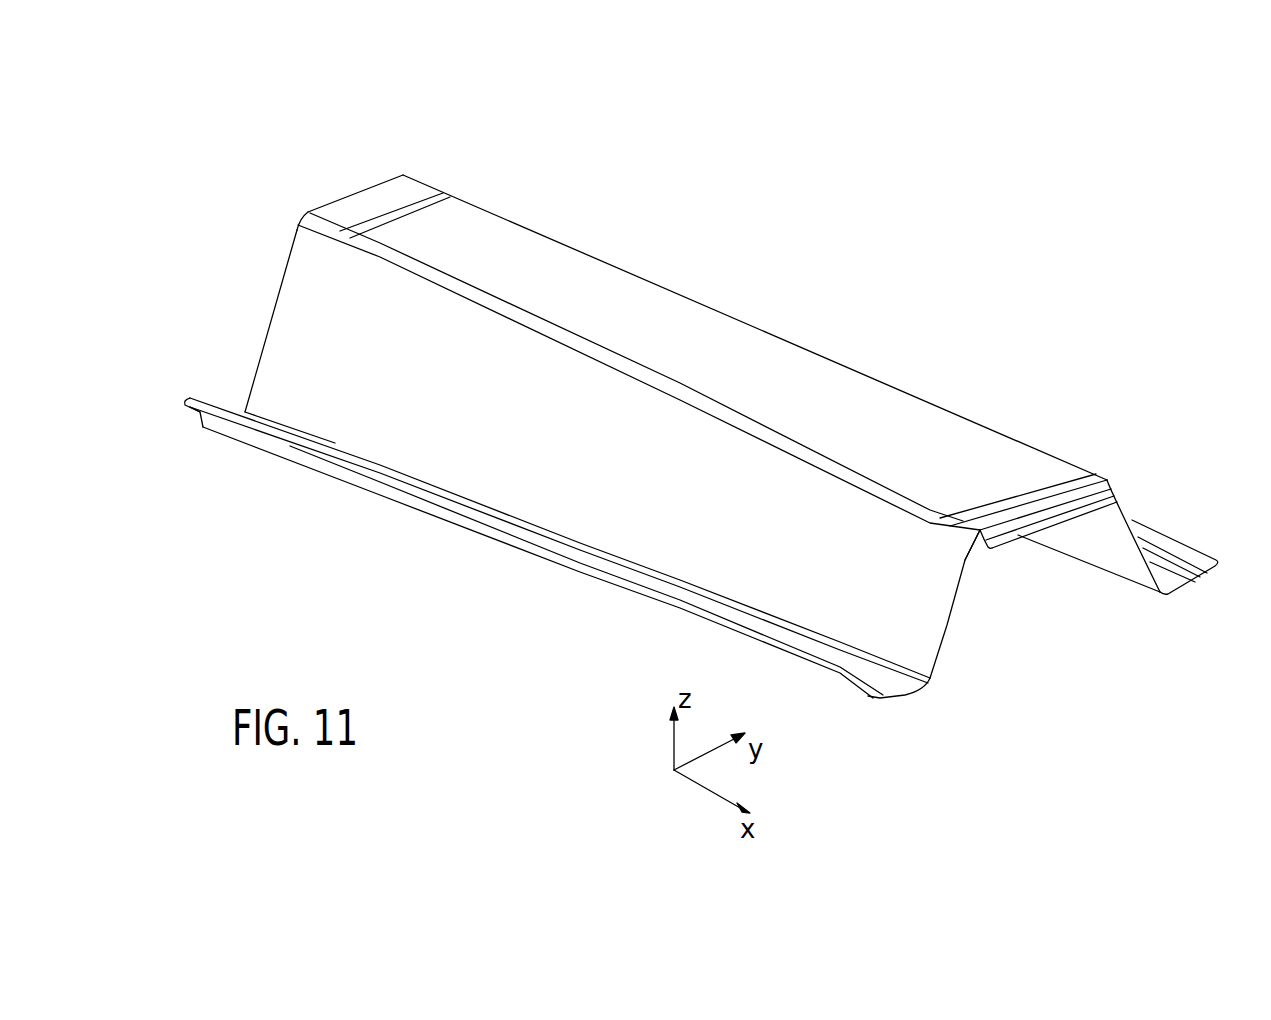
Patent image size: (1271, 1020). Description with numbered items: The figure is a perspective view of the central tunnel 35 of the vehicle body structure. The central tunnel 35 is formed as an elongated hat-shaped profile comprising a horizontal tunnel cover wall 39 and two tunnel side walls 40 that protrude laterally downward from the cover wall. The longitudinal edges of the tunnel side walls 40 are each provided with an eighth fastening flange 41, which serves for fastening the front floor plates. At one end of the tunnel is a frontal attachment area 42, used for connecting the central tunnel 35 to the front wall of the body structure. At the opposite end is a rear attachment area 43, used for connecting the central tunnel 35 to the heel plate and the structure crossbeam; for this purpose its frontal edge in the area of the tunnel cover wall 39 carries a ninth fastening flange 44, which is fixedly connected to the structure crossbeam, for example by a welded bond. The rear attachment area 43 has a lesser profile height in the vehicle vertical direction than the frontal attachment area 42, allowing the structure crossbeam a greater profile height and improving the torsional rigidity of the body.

The central tunnel 35 is at (706, 381).
The tunnel cover wall 39 is at (653, 332).
The tunnel side walls 40 is at (525, 465).
The eighth fastening flange 41 is at (302, 448).
The frontal attachment area 42 is at (290, 275).
The rear attachment area 43 is at (947, 625).
The ninth fastening flange 44 is at (1053, 515).